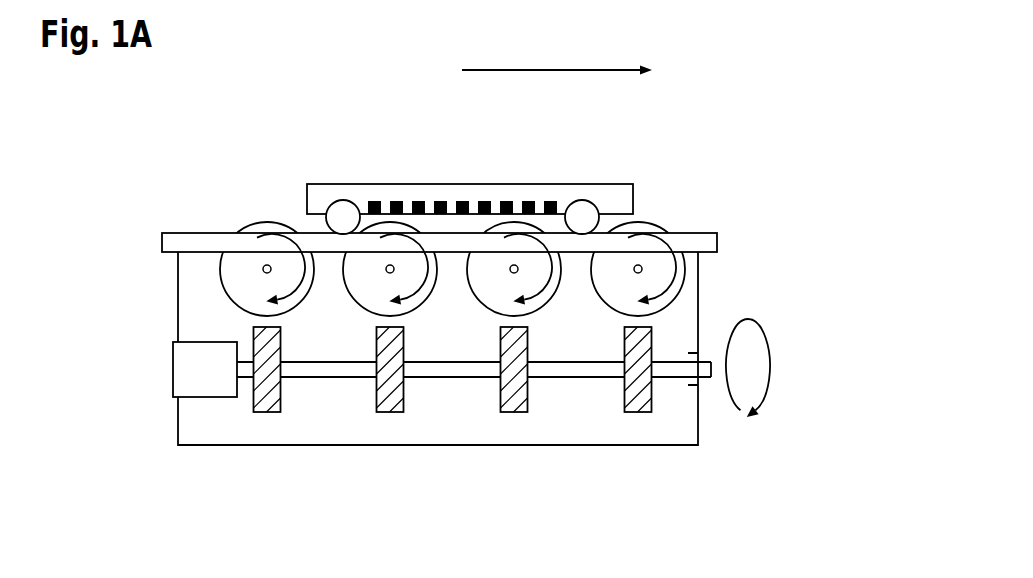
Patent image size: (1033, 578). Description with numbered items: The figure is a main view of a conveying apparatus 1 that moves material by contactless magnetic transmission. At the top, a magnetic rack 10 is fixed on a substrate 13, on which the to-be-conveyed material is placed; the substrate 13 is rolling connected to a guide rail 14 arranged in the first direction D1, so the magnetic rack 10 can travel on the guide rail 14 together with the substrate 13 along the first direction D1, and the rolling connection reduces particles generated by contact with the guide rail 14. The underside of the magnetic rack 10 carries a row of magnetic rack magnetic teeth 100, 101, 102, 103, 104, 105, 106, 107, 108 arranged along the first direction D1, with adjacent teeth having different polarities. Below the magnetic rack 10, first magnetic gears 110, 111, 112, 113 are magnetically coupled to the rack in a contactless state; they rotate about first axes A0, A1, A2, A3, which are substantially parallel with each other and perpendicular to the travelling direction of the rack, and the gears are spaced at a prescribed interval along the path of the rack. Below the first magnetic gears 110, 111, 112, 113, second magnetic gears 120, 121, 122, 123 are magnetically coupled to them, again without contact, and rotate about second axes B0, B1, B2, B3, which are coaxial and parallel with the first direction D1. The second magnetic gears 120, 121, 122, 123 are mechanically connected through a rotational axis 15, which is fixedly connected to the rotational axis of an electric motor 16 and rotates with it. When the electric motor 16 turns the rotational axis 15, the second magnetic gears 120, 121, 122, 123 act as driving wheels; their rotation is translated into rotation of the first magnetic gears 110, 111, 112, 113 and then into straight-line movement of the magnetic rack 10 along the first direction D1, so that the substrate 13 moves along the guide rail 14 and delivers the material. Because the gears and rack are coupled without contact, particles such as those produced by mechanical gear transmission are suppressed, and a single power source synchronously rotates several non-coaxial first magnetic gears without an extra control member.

The conveying apparatus 1 is at (757, 76).
The magnetic rack 10 is at (575, 188).
The substrate 13 is at (312, 199).
The guide rail 14 is at (700, 242).
The rotational axis 15 is at (703, 378).
The electric motor 16 is at (173, 372).
The magnetic rack magnetic tooth 100 is at (373, 201).
The magnetic rack magnetic tooth 101 is at (395, 201).
The magnetic rack magnetic tooth 102 is at (419, 201).
The magnetic rack magnetic tooth 103 is at (441, 201).
The magnetic rack magnetic tooth 104 is at (466, 201).
The magnetic rack magnetic tooth 105 is at (488, 201).
The magnetic rack magnetic tooth 106 is at (523, 201).
The magnetic rack magnetic tooth 107 is at (552, 201).
The magnetic rack magnetic tooth 108 is at (566, 199).
The first magnetic gear 110 is at (240, 294).
The first magnetic gear 111 is at (428, 290).
The first magnetic gear 112 is at (553, 288).
The first magnetic gear 113 is at (672, 293).
The second magnetic gear 120 is at (267, 387).
The second magnetic gear 121 is at (393, 387).
The second magnetic gear 122 is at (518, 393).
The second magnetic gear 123 is at (637, 395).
The first axis A0 is at (263, 271).
The first axis A1 is at (390, 269).
The first axis A2 is at (514, 269).
The first axis A3 is at (642, 268).
The second axis B0 is at (280, 372).
The second axis B1 is at (404, 372).
The second axis B2 is at (528, 373).
The second axis B3 is at (652, 373).
The first direction D1 is at (557, 57).